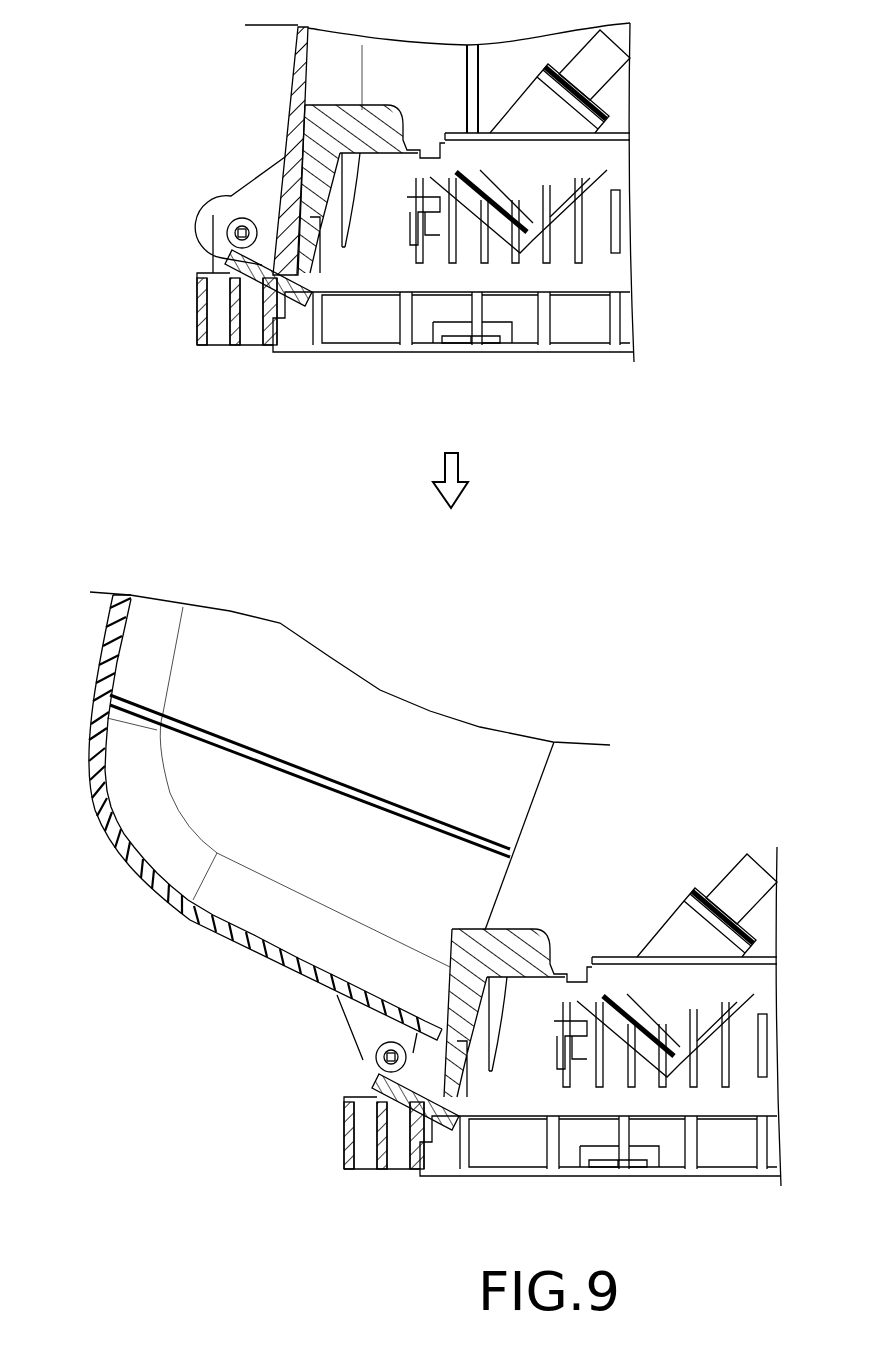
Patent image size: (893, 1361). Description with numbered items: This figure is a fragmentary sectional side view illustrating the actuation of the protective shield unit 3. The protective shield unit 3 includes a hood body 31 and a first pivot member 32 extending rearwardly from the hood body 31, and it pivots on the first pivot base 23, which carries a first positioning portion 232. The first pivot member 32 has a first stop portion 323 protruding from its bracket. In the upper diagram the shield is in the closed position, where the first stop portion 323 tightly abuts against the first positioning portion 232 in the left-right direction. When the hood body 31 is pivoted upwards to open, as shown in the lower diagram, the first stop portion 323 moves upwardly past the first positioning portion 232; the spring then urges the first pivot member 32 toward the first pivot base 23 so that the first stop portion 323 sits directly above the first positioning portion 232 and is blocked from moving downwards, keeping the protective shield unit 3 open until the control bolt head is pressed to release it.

The protective shield unit 3 is at (272, 73).
The hood body 31 is at (293, 133).
The first pivot member 32 is at (228, 183).
The first stop portion 323 is at (240, 205).
The first pivot base 23 is at (192, 249).
The first positioning portion 232 is at (320, 257).